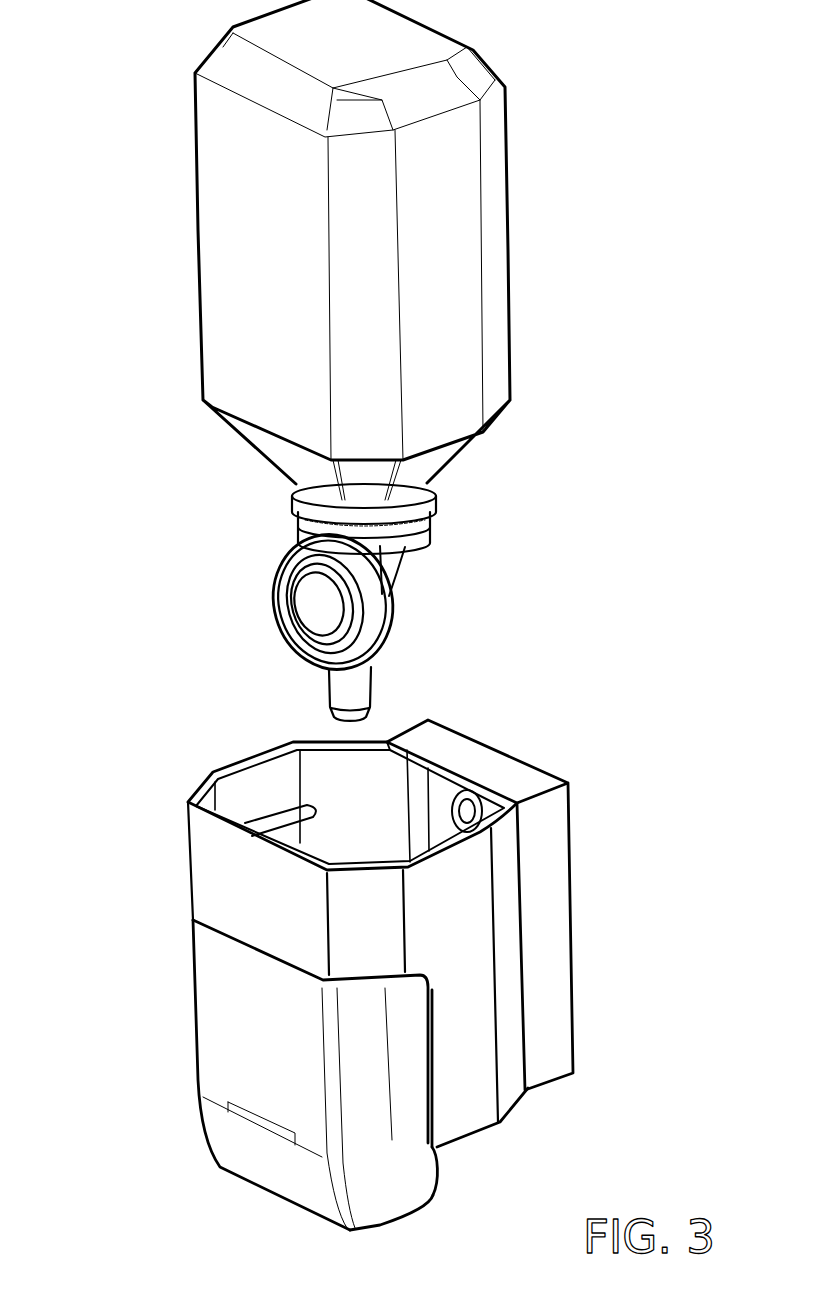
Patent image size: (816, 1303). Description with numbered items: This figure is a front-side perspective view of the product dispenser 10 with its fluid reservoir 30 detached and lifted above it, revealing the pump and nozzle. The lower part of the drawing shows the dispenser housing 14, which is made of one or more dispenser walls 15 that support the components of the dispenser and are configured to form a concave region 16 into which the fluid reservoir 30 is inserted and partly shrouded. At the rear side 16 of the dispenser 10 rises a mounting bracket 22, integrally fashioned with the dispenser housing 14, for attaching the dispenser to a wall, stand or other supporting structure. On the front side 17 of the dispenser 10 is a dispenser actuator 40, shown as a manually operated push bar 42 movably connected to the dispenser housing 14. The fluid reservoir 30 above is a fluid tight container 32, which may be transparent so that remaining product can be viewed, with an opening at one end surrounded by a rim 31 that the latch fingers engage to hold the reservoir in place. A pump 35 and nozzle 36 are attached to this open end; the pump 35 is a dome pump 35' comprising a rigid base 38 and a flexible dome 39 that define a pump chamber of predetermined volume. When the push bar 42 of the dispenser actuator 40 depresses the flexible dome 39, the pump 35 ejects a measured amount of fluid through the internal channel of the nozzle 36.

The product dispenser 10 is at (158, 1015).
The dispenser housing 14 is at (200, 847).
The dispenser walls 15 is at (210, 887).
The rear side / concave region 16 is at (283, 795).
The front side 17 is at (170, 932).
The mounting bracket 22 is at (545, 1017).
The fluid reservoir 30 is at (487, 180).
The rim 31 is at (448, 498).
The fluid tight container 32 is at (493, 253).
The pump 35 is at (316, 582).
The dome pump 35' is at (255, 563).
The nozzle 36 is at (330, 697).
The rigid base 38 is at (373, 625).
The flexible dome 39 is at (308, 600).
The dispenser actuator 40 is at (378, 1155).
The push bar 42 is at (375, 1192).